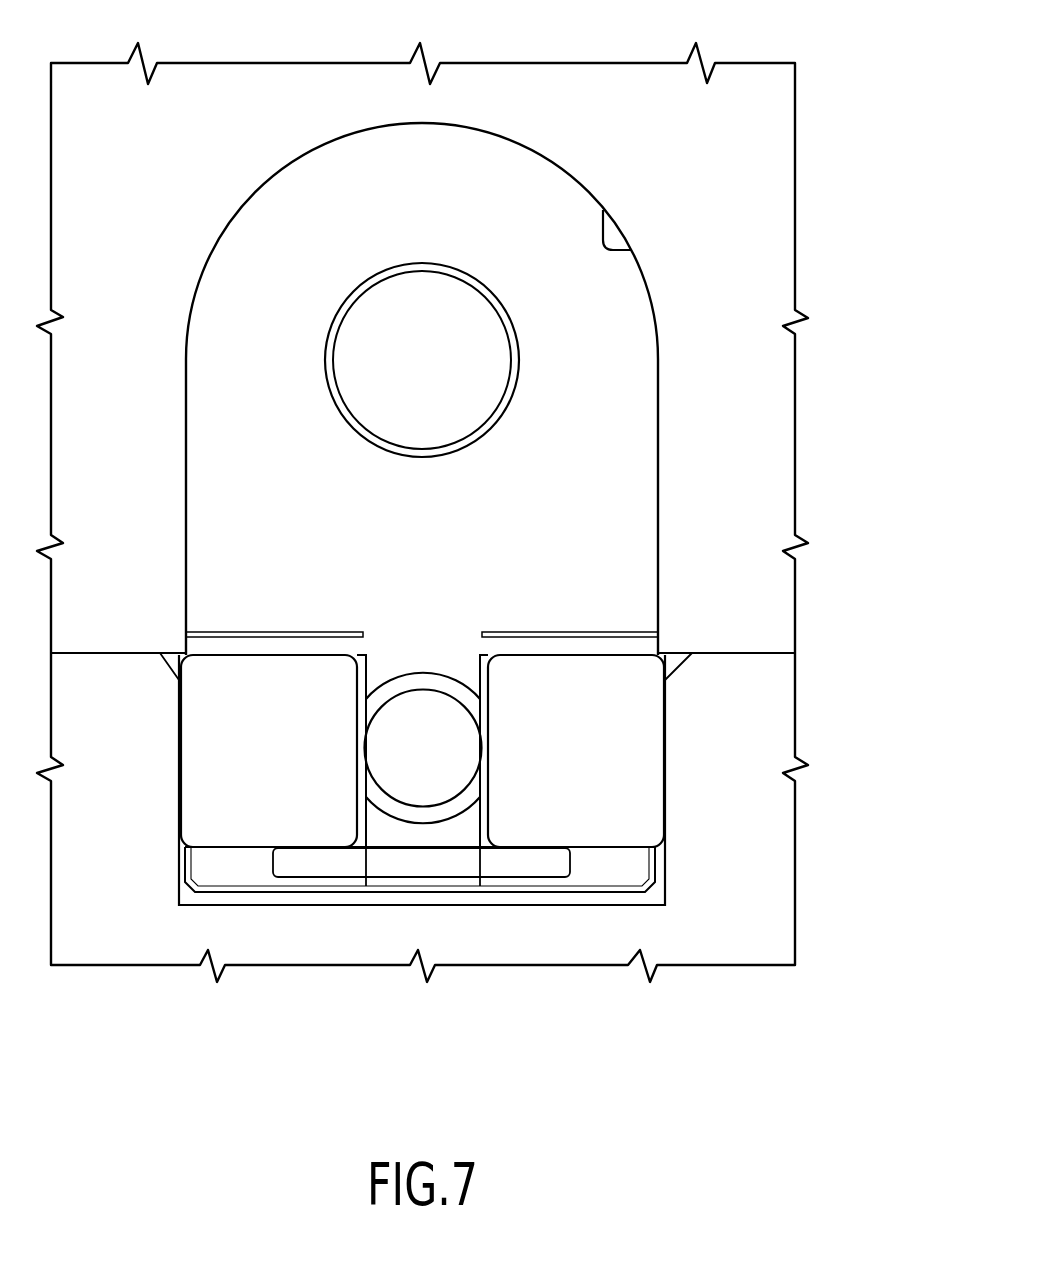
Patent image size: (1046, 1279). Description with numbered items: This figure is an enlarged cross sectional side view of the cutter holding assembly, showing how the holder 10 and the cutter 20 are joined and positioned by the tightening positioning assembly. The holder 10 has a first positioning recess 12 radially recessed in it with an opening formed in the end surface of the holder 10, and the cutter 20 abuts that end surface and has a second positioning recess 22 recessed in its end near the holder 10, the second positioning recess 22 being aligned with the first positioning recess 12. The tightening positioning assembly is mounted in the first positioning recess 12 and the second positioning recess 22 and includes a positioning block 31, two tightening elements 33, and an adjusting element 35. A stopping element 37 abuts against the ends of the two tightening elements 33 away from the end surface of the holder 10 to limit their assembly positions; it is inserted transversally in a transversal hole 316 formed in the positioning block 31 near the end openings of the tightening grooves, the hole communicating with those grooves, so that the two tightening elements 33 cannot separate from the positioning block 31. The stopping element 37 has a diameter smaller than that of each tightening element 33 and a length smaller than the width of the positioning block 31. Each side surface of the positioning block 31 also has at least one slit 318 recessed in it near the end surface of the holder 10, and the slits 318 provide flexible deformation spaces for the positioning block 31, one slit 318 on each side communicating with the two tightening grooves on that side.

The holder 10 is at (792, 412).
The first positioning recess 12 is at (603, 210).
The cutter 20 is at (795, 860).
The second positioning recess 22 is at (662, 893).
The positioning block 31 is at (503, 135).
The tightening elements 33 is at (218, 778).
The adjusting element 35 is at (423, 697).
The stopping element 37 is at (527, 865).
The transversal hole 316 is at (398, 873).
The slit 318 is at (227, 633).